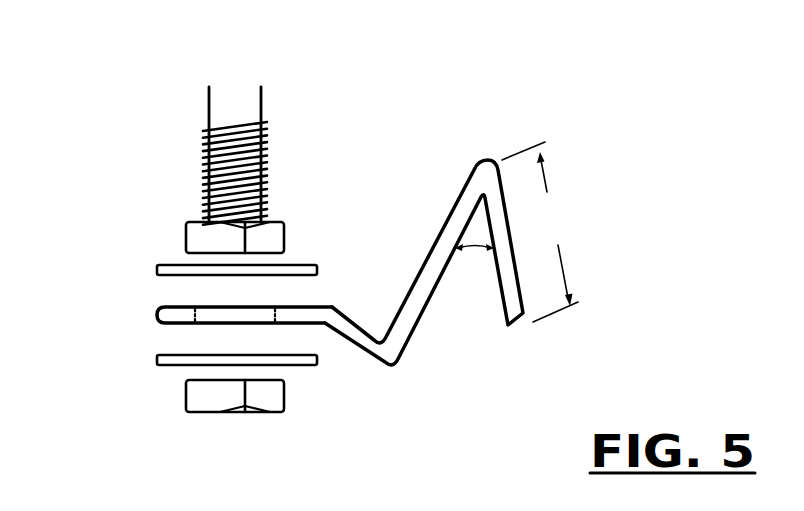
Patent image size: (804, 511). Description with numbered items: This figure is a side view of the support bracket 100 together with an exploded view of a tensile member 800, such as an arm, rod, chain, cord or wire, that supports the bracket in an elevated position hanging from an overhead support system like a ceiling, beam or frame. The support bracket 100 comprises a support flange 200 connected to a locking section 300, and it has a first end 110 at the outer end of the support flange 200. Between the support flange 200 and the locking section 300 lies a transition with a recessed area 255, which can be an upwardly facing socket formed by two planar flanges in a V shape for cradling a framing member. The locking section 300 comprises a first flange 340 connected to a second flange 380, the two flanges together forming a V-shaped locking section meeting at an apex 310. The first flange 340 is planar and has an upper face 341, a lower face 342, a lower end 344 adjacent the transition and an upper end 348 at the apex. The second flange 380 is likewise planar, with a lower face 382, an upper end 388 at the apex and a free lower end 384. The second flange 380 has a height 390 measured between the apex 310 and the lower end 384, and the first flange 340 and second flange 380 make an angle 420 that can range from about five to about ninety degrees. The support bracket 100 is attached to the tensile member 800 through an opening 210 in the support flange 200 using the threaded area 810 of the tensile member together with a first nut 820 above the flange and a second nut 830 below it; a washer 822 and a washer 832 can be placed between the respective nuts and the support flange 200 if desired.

The support bracket 100 is at (614, 192).
The first end 110 is at (157, 318).
The support flange 200 is at (333, 307).
The opening 210 is at (225, 315).
The recessed area 255 is at (379, 319).
The locking section 300 is at (555, 380).
The apex 310 is at (496, 158).
The first flange 340 is at (422, 268).
The upper face of first flange 341 is at (441, 235).
The lower face of first flange 342 is at (423, 310).
The lower end of first flange 344 is at (380, 367).
The upper end of first flange 348 is at (480, 158).
The second flange 380 is at (503, 287).
The lower face of second flange 382 is at (493, 277).
The lower end of second flange 384 is at (523, 318).
The upper end of second flange 388 is at (480, 158).
The height 390 is at (540, 232).
The angle 420 is at (474, 259).
The tensile member 800 is at (235, 97).
The threaded area 810 is at (263, 130).
The first nut 820 is at (202, 238).
The washer 822 is at (155, 267).
The second nut 830 is at (207, 405).
The washer 832 is at (155, 368).